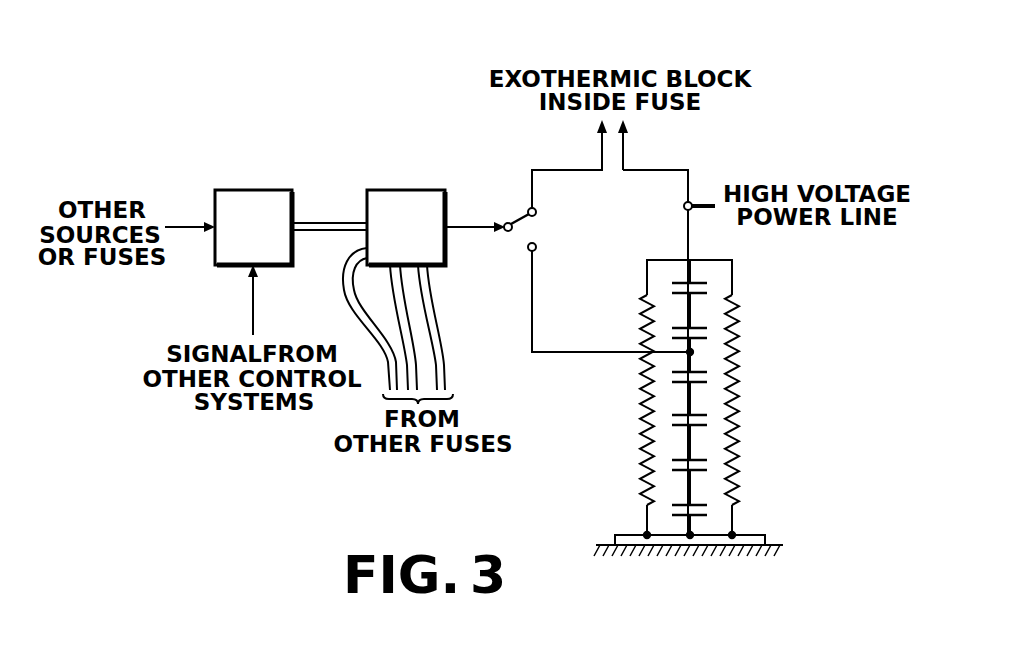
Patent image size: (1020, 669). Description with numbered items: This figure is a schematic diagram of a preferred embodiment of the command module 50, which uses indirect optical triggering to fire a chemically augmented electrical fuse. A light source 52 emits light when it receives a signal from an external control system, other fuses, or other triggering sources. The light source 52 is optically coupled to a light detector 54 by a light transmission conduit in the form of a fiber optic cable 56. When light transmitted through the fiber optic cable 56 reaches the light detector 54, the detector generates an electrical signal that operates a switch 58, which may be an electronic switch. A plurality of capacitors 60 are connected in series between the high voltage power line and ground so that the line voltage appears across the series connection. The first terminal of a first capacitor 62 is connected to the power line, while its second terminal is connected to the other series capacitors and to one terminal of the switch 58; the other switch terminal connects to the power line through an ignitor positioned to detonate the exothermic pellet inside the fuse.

The command module 50 is at (419, 66).
The light source 52 is at (257, 190).
The light detector 54 is at (425, 190).
The fiber optic cable 56 is at (326, 213).
The switch 58 is at (515, 222).
The capacitors 60 is at (698, 403).
The first capacitor 62 is at (682, 312).